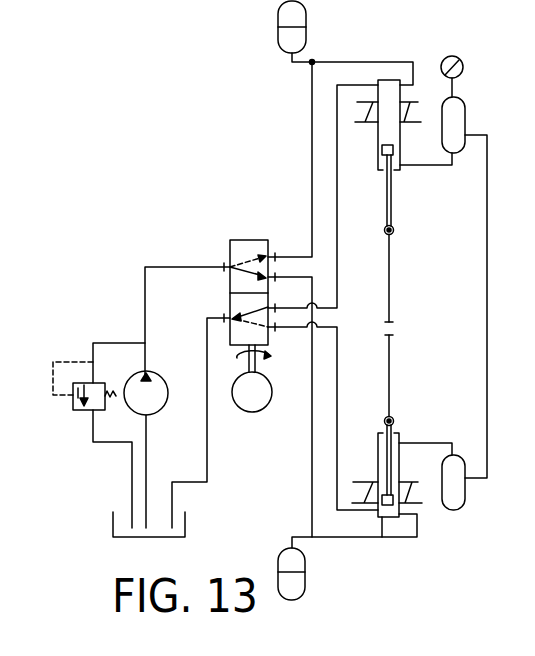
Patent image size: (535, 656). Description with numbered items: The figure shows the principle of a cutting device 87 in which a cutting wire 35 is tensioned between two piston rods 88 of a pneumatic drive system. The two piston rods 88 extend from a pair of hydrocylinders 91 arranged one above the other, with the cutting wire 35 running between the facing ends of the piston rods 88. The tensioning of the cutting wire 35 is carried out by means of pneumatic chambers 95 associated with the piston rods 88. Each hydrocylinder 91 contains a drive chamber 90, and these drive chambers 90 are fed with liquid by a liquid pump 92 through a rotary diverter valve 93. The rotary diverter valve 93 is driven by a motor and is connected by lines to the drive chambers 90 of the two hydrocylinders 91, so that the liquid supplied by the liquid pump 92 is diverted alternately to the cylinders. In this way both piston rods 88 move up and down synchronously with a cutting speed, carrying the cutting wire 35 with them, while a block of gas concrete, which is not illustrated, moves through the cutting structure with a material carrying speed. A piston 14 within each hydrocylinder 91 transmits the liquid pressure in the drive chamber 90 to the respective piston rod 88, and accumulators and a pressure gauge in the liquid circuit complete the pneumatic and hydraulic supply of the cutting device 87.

The cutting device 87 is at (298, 145).
The drive chamber 90 is at (394, 86).
The hydrocylinder 91 is at (401, 102).
The piston 14 is at (364, 130).
The pneumatic chamber 95 is at (378, 168).
The piston rod 88 is at (393, 227).
The cutting wire 35 is at (389, 273).
The rotary diverter valve 93 is at (245, 207).
The liquid pump 92 is at (168, 387).